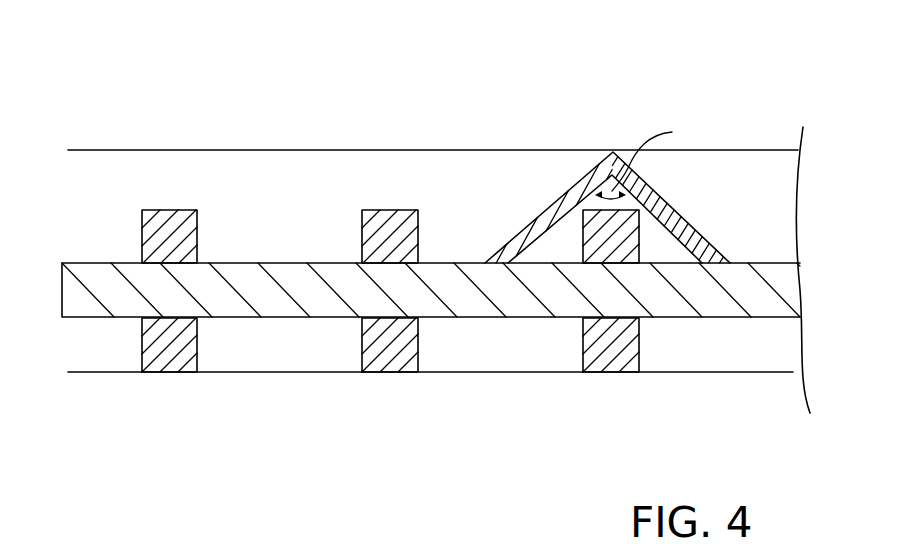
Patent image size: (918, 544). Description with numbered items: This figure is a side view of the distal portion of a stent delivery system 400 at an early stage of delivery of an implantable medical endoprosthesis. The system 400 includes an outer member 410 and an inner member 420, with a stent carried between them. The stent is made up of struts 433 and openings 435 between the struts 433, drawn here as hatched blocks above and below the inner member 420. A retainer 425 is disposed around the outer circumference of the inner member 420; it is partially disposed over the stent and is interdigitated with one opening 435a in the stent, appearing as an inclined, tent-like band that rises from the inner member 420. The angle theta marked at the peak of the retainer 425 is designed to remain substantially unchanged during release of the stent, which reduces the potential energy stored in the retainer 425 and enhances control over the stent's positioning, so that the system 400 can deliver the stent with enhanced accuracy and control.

The stent delivery system 400 is at (262, 108).
The outer member 410 is at (183, 150).
The inner member 420 is at (108, 280).
The retainer 425 is at (662, 208).
The struts 433 is at (172, 367).
The openings 435 is at (264, 236).
The opening 435a is at (485, 237).